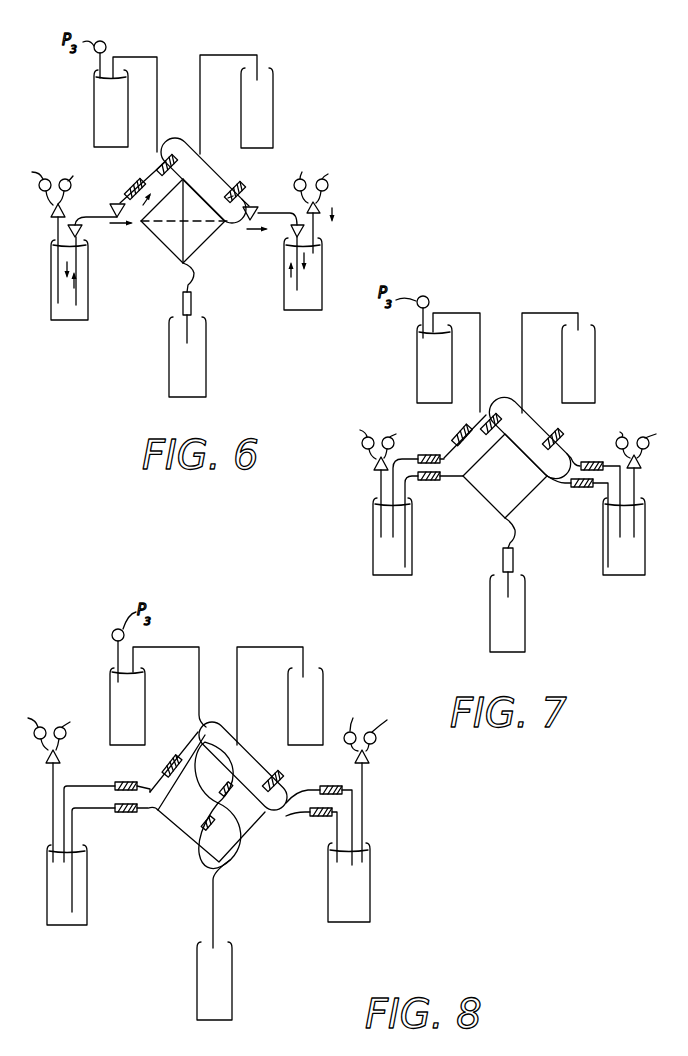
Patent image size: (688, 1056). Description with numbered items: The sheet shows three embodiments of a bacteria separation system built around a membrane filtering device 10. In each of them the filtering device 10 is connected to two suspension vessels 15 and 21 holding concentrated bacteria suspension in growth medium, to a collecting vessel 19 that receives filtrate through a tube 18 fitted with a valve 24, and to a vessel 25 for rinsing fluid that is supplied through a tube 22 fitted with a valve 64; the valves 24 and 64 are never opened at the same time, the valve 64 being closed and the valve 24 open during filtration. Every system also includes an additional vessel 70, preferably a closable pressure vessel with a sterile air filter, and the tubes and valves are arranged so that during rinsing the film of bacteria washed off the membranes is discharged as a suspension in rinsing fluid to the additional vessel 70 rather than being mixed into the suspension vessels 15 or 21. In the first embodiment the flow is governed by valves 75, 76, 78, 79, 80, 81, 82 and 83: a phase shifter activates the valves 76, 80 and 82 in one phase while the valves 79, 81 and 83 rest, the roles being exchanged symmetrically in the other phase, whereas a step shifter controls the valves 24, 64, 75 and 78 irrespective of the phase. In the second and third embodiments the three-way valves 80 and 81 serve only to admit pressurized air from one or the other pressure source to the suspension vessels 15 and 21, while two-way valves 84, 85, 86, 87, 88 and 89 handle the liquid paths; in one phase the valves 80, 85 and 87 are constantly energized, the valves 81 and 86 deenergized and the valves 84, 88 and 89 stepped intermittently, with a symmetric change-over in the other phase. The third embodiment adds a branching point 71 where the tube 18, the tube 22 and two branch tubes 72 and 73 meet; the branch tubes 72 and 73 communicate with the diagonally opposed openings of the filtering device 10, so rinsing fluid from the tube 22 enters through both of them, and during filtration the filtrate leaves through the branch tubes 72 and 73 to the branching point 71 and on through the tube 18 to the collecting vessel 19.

In FIG. 6, the filtering device 10 is at (158, 258).
In FIG. 7, the filtering device 10 is at (481, 505).
In FIG. 8, the filtering device 10 is at (188, 860).
In FIG. 6, the suspension vessel 15 is at (68, 320).
In FIG. 7, the suspension vessel 15 is at (372, 549).
In FIG. 8, the suspension vessel 15 is at (89, 905).
In FIG. 6, the tube for filtrate 18 is at (200, 268).
In FIG. 7, the tube for filtrate 18 is at (518, 538).
In FIG. 6, the collecting vessel 19 is at (207, 365).
In FIG. 7, the collecting vessel 19 is at (527, 620).
In FIG. 8, the collecting vessel 19 is at (235, 970).
In FIG. 6, the suspension vessel 21 is at (283, 294).
In FIG. 7, the suspension vessel 21 is at (602, 559).
In FIG. 8, the suspension vessel 21 is at (327, 908).
In FIG. 6, the tube for rinsing fluid 22 is at (148, 56).
In FIG. 7, the tube for rinsing fluid 22 is at (483, 330).
In FIG. 8, the tube for rinsing fluid 22 is at (198, 682).
In FIG. 6, the valve of tube for filtrate 24 is at (193, 305).
In FIG. 7, the valve of tube for filtrate 24 is at (514, 563).
In FIG. 8, the valve of tube for filtrate 24 is at (203, 830).
In FIG. 6, the vessel for rinsing fluid 25 is at (93, 103).
In FIG. 7, the vessel for rinsing fluid 25 is at (416, 362).
In FIG. 8, the vessel for rinsing fluid 25 is at (146, 702).
In FIG. 6, the valve of tube for rinsing fluid 64 is at (182, 137).
In FIG. 7, the valve of tube for rinsing fluid 64 is at (506, 400).
In FIG. 8, the valve of tube for rinsing fluid 64 is at (268, 812).
In FIG. 6, the additional vessel 70 is at (275, 104).
In FIG. 7, the additional vessel 70 is at (597, 365).
In FIG. 8, the additional vessel 70 is at (289, 702).
In FIG. 8, the branching point 71 is at (240, 828).
In FIG. 8, the branch tube 72 is at (203, 824).
In FIG. 8, the branch tube 73 is at (238, 845).
In FIG. 6, the valve 75 is at (120, 193).
In FIG. 6, the valve 76 is at (158, 166).
In FIG. 6, the valve 78 is at (253, 206).
In FIG. 6, the valve 79 is at (237, 182).
In FIG. 6, the three-way valve 80 is at (50, 210).
In FIG. 7, the three-way valve 80 is at (375, 470).
In FIG. 8, the three-way valve 80 is at (49, 765).
In FIG. 6, the three-way valve 81 is at (322, 205).
In FIG. 7, the three-way valve 81 is at (642, 470).
In FIG. 8, the three-way valve 81 is at (370, 760).
In FIG. 6, the valve 82 is at (85, 238).
In FIG. 6, the valve 83 is at (290, 228).
In FIG. 7, the two-way valve 84 is at (432, 481).
In FIG. 8, the two-way valve 84 is at (120, 814).
In FIG. 7, the two-way valve 85 is at (434, 456).
In FIG. 8, the two-way valve 85 is at (127, 782).
In FIG. 7, the two-way valve 86 is at (457, 431).
In FIG. 8, the two-way valve 86 is at (168, 759).
In FIG. 7, the two-way valve 87 is at (580, 488).
In FIG. 8, the two-way valve 87 is at (318, 818).
In FIG. 7, the two-way valve 88 is at (592, 461).
In FIG. 8, the two-way valve 88 is at (333, 781).
In FIG. 7, the two-way valve 89 is at (568, 428).
In FIG. 8, the two-way valve 89 is at (290, 767).